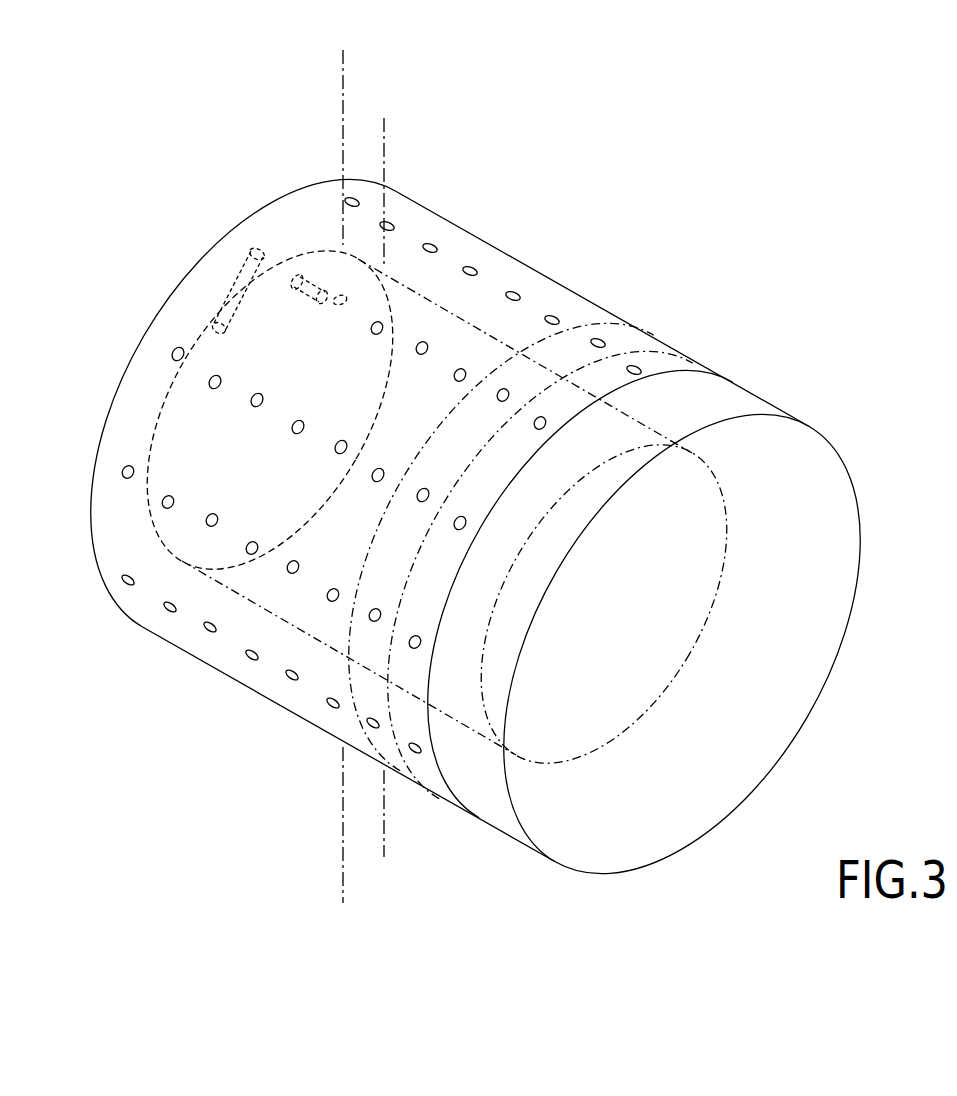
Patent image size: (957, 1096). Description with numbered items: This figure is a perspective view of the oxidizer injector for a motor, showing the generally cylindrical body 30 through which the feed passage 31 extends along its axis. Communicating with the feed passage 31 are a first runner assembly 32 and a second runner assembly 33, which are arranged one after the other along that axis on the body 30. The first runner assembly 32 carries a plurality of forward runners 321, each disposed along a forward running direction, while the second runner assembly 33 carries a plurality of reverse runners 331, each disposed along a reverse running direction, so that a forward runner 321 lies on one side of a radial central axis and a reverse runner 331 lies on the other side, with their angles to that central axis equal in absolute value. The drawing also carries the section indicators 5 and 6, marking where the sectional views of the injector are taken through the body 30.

The body 30 is at (539, 253).
The feed passage 31 is at (719, 511).
The first runner assembly 32 is at (684, 359).
The forward runner 321 is at (640, 364).
The second runner assembly 33 is at (637, 325).
The reverse runner 331 is at (601, 338).
The section line 5- 5 is at (366, 74).
The section line 6- 6 is at (440, 162).